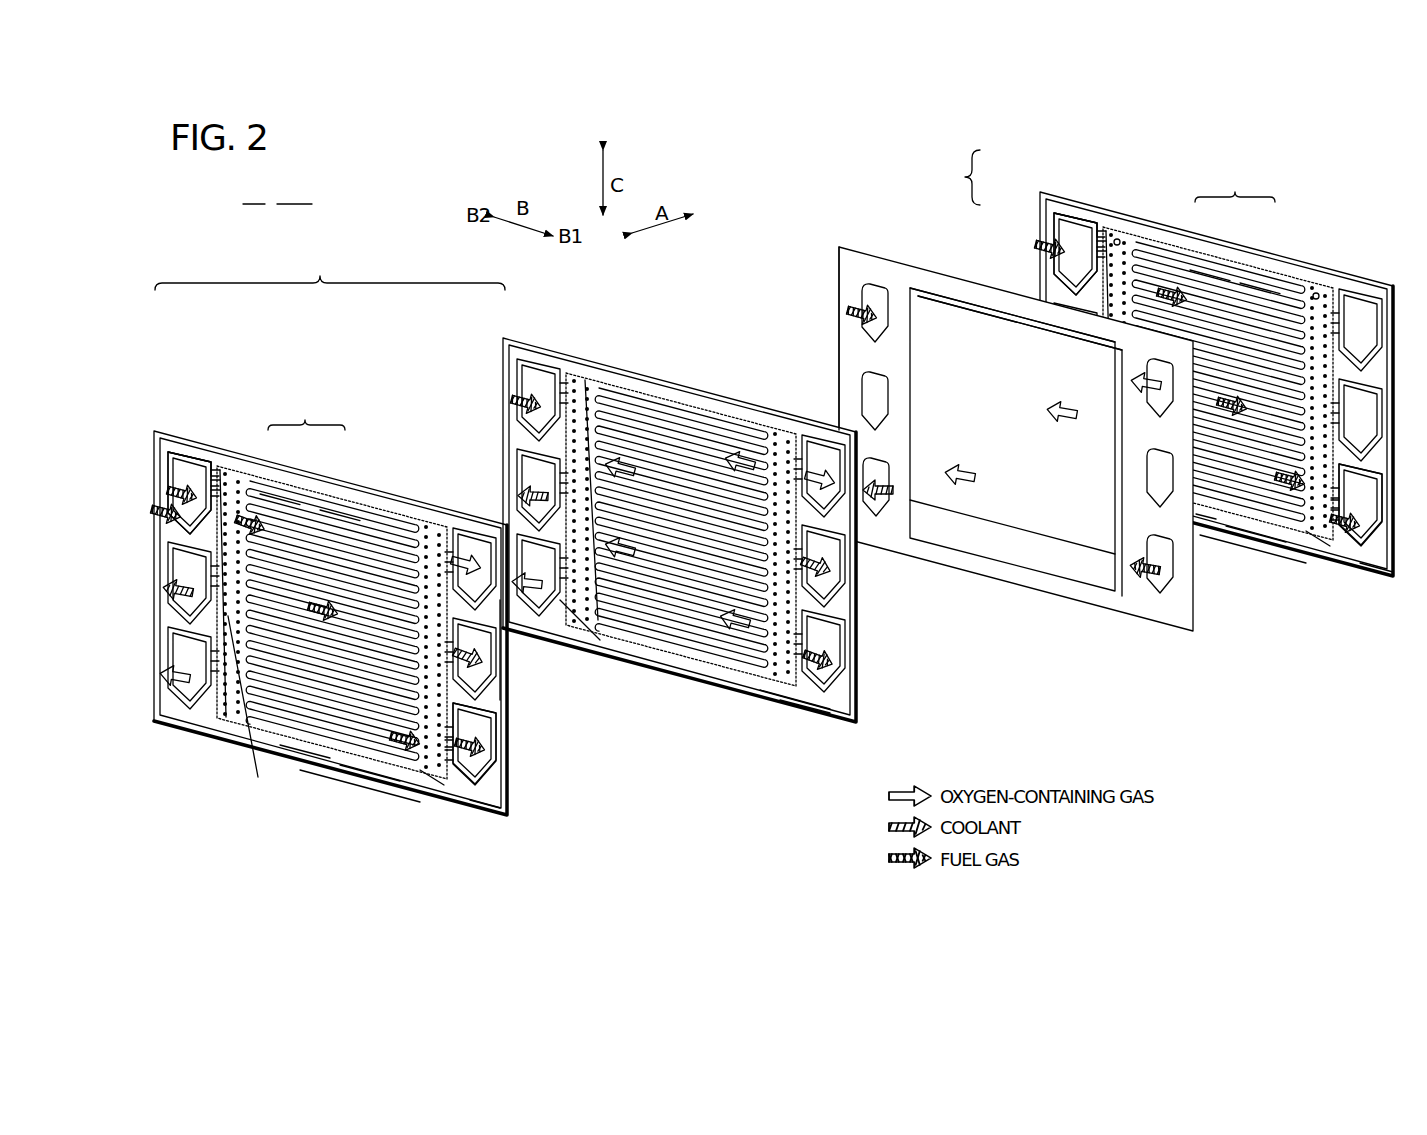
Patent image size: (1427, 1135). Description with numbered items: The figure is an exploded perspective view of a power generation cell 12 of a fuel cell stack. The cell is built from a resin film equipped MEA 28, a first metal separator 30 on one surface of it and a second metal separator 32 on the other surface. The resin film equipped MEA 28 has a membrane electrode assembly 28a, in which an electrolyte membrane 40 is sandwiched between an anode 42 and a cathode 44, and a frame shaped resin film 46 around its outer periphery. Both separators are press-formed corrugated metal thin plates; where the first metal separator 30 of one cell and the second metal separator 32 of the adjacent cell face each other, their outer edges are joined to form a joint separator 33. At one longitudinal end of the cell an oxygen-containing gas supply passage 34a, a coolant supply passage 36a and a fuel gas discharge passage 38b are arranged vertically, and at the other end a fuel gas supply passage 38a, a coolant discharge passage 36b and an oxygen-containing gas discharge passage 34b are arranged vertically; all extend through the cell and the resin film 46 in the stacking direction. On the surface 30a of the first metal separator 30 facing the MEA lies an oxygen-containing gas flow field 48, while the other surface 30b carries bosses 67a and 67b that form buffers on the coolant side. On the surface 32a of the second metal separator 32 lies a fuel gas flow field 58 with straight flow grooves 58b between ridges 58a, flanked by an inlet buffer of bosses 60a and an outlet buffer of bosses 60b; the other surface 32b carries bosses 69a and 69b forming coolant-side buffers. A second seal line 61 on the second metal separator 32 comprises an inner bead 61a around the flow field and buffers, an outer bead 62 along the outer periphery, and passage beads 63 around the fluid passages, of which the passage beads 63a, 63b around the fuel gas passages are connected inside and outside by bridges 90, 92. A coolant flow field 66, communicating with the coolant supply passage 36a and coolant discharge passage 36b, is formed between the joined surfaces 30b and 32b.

The power generation cell 12 is at (277, 193).
The resin film equipped membrane electrode assembly 28 is at (1018, 594).
The membrane electrode assembly 28a is at (1090, 588).
The first metal separator 30 is at (500, 335).
The surface of the first metal separator 30a is at (848, 710).
The another surface of the first metal separator 30b is at (798, 708).
The second metal separator 32 is at (157, 428).
The surface of the second metal separator 32a is at (501, 812).
The another surface of the second metal separator 32b is at (478, 813).
The joint separator 33 is at (567, 220).
The oxygen-containing gas supply passage 34a is at (472, 545).
The oxygen-containing gas discharge passage 34b is at (190, 706).
The coolant supply passage 36a is at (493, 692).
The coolant discharge passage 36b is at (190, 612).
The fuel gas supply passage 38a is at (1062, 288).
The fuel gas discharge passage 38b is at (500, 752).
The electrolyte membrane 40 is at (1062, 580).
The anode 42 is at (974, 300).
The cathode 44 is at (922, 312).
The resin film 46 is at (884, 284).
The oxygen-containing gas flow field 48 is at (649, 424).
The fuel gas flow field 58 is at (775, 474).
The ridges 58a is at (272, 497).
The straight flow grooves 58b is at (330, 507).
The bosses 60a is at (226, 720).
The bosses 60b is at (441, 781).
The second seal line 61 is at (373, 793).
The inner bead 61a is at (312, 752).
The outer bead 62 is at (371, 770).
The passage beads 63 is at (182, 468).
The passage bead 63a is at (632, 344).
The passage bead 63b is at (484, 772).
The coolant flow field 66 is at (611, 400).
The bosses 67a is at (792, 710).
The bosses 67b is at (578, 630).
The bosses 69a is at (1122, 240).
The bosses 69b is at (1316, 293).
The bridge 90 is at (213, 482).
The bridge 92 is at (446, 773).